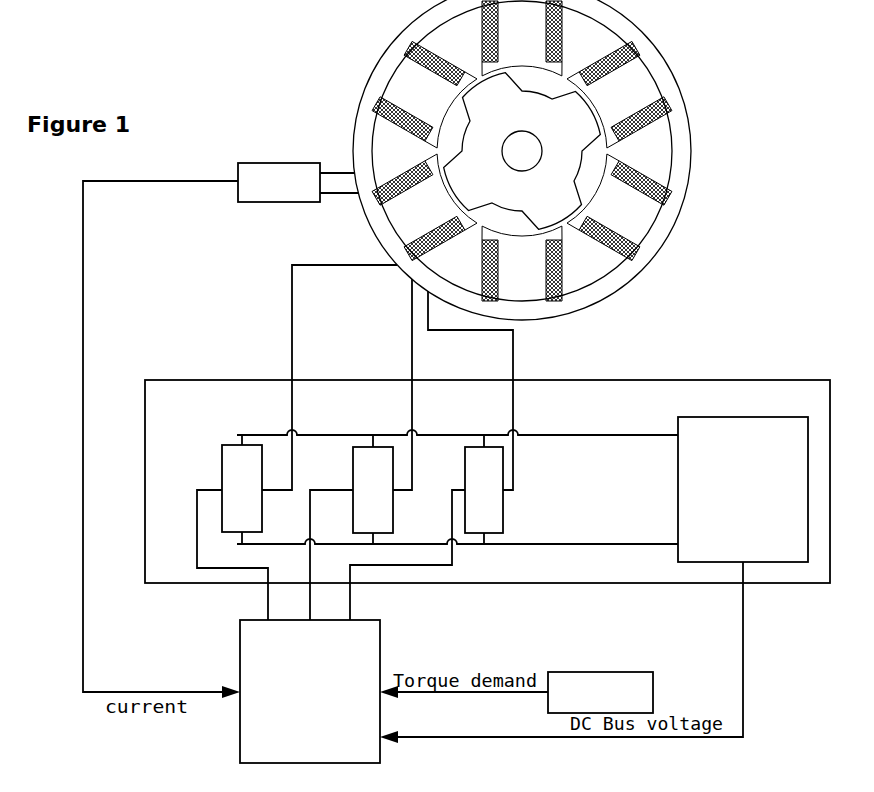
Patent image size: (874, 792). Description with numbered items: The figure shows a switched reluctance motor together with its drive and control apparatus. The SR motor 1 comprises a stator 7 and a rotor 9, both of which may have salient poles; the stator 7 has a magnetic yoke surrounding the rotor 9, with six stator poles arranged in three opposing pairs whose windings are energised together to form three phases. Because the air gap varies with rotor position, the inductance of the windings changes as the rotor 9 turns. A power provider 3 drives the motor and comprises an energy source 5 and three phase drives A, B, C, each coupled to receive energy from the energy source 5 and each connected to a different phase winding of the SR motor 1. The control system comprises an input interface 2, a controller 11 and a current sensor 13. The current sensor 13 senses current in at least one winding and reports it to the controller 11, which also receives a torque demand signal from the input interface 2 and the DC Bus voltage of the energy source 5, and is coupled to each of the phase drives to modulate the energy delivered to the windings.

The SR motor 1 is at (676, 255).
The input interface 2 is at (600, 670).
The power provider 3 is at (723, 378).
The energy source 5 is at (743, 489).
The stator 7 is at (657, 75).
The rotor 9 is at (522, 151).
The controller 11 is at (310, 691).
The current sensor 13 is at (286, 165).